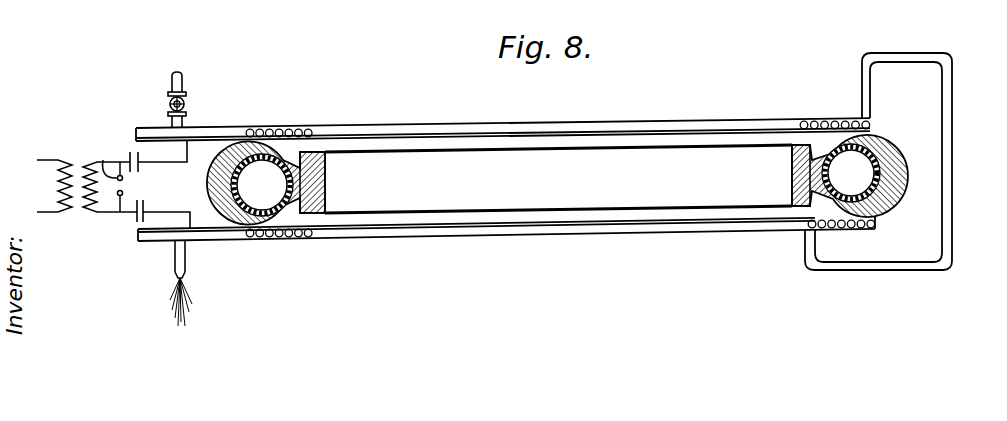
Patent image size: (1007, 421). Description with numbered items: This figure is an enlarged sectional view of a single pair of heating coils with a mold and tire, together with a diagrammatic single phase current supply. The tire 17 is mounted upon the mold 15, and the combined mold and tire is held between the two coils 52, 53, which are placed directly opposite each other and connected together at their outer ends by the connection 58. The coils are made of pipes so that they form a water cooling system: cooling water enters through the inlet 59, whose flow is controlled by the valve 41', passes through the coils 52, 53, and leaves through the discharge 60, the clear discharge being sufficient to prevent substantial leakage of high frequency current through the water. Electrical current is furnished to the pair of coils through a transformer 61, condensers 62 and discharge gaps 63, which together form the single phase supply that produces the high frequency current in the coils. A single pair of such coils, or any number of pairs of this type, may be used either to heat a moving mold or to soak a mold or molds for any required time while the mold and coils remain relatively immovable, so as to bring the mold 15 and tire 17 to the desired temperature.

The mold 15 is at (326, 178).
The tire 17 is at (893, 145).
The valve 41' is at (204, 104).
The coil 52 is at (353, 129).
The coil 53 is at (396, 230).
The connection 58 is at (952, 167).
The inlet 59 is at (180, 80).
The discharge 60 is at (186, 263).
The transformer 61 is at (75, 165).
The condensers 62 is at (141, 163).
The discharge gaps 63 is at (103, 160).